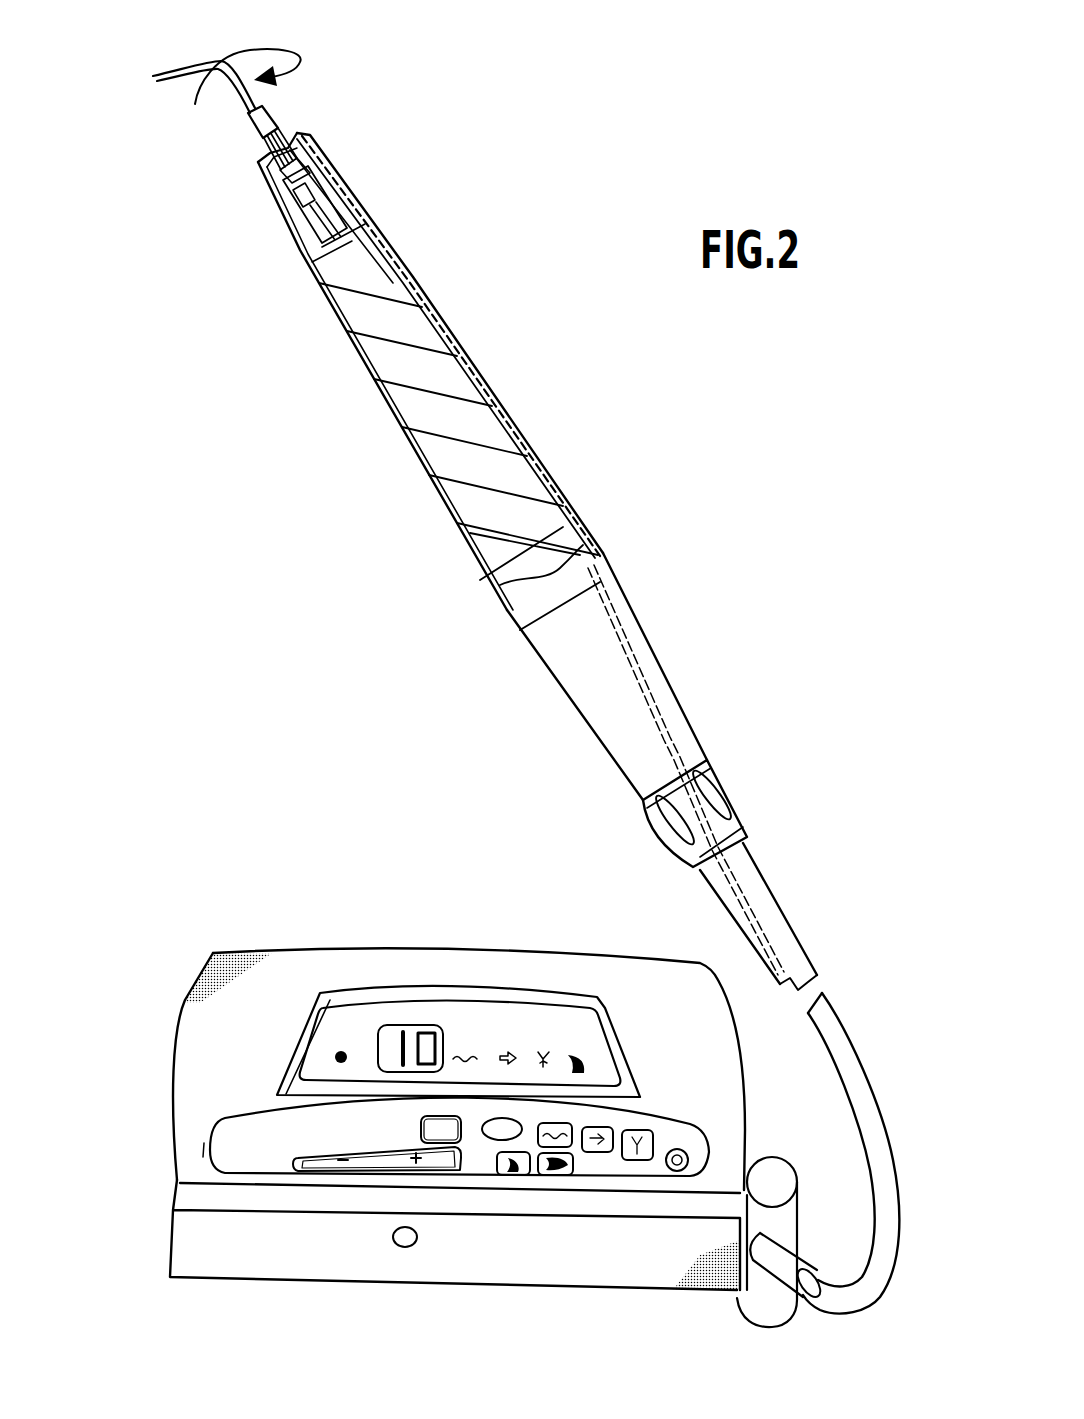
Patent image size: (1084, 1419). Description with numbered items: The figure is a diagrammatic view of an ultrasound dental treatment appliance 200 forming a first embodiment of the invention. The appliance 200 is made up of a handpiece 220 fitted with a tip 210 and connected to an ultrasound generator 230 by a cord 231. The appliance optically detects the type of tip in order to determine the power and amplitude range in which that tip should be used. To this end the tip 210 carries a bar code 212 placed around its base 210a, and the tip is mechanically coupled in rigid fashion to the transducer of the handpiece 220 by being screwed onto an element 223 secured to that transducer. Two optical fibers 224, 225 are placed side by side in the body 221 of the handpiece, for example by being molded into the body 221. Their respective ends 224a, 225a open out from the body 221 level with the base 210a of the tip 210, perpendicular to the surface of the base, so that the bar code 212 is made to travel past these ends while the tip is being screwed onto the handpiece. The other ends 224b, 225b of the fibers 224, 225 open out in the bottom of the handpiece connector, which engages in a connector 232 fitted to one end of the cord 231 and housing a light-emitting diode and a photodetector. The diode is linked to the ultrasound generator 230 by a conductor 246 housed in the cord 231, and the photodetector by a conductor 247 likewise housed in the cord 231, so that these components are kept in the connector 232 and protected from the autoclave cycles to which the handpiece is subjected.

The ultrasound dental treatment appliance 200 is at (222, 428).
The tip 210 is at (205, 58).
The base of the tip 210a is at (258, 128).
The bar code 212 is at (292, 133).
The handpiece 220 is at (421, 477).
The body of the handpiece 221 is at (461, 350).
The element secured to the transducer 223 is at (303, 216).
The first optical fiber 224 is at (540, 553).
The second optical fiber 225 is at (532, 440).
The end of the first optical fiber 224a is at (450, 344).
The end of the second optical fiber 225a is at (308, 142).
The other end of the first optical fiber 224b is at (686, 770).
The other end of the second optical fiber 225b is at (625, 645).
The ultrasound generator 230 is at (444, 932).
The cord 231 is at (840, 1040).
The connector of the cord 232 is at (585, 707).
The conductor for the LED 246 is at (730, 845).
The conductor for the photodetector 247 is at (680, 728).